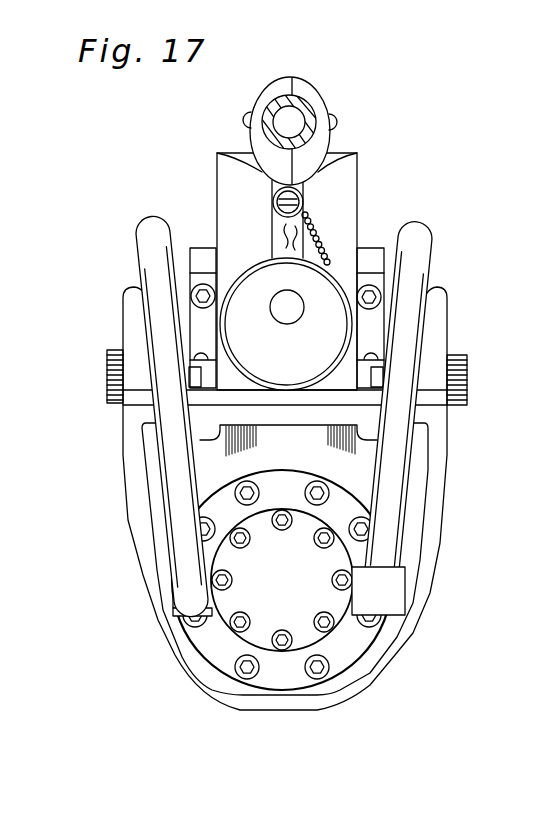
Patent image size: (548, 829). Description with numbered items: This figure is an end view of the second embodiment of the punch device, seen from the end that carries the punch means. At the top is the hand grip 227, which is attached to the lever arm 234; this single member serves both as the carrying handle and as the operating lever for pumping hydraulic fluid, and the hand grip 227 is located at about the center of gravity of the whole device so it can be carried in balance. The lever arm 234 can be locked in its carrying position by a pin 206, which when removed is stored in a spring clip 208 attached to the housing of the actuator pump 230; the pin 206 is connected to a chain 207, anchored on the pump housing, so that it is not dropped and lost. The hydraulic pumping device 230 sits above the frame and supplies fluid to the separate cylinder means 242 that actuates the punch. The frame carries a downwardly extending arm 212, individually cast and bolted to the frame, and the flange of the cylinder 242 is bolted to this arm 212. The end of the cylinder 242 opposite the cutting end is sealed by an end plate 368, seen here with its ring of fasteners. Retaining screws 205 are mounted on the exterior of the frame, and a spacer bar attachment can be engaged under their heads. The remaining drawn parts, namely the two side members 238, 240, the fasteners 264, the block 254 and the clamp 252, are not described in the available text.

The hand grip 227 is at (317, 88).
The lever arm 234 is at (313, 108).
The pin 206 is at (304, 197).
The chain 207 is at (313, 224).
The spring clip 208 is at (287, 227).
The left handle arm 238 is at (155, 257).
The right handle arm 240 is at (425, 253).
The retaining screws 205 is at (107, 372).
The hydraulic pumping device 230 is at (305, 368).
The mounting bolts 264 is at (318, 482).
The arm 212 is at (428, 500).
The clamp block 254 is at (383, 587).
The end plate 368 is at (300, 612).
The clamp plate 252 is at (176, 613).
The separate cylinder means 242 is at (330, 648).